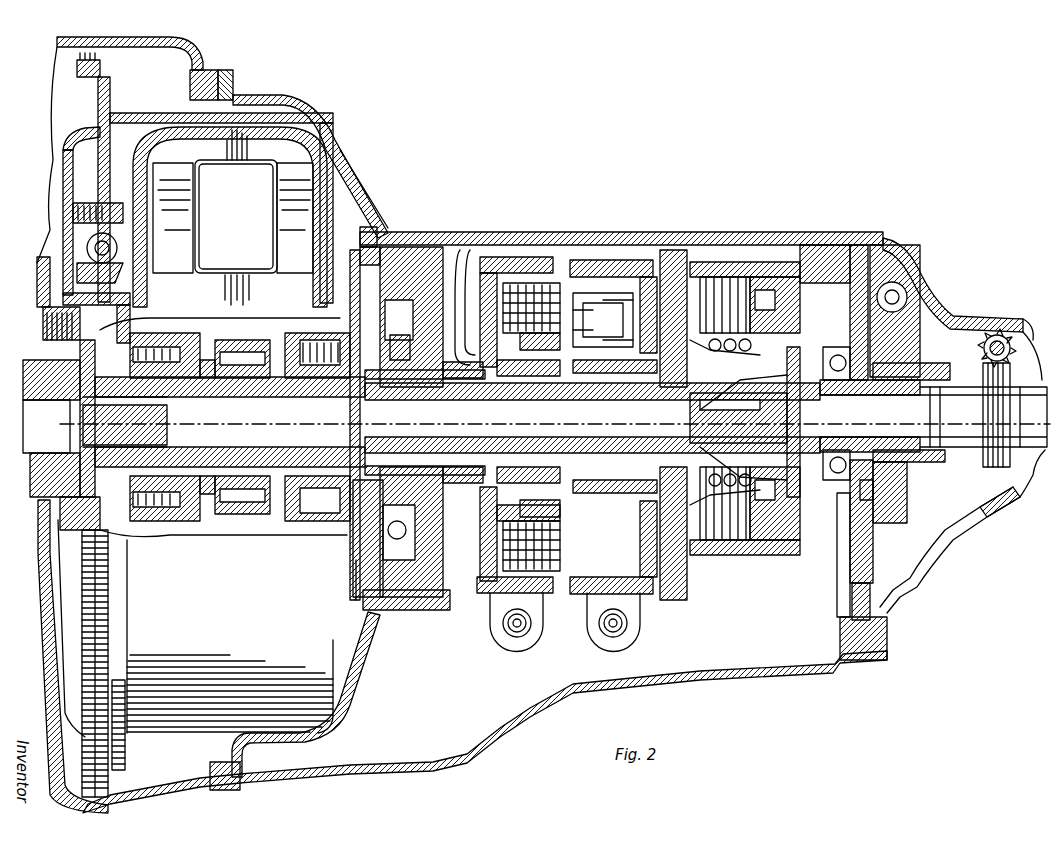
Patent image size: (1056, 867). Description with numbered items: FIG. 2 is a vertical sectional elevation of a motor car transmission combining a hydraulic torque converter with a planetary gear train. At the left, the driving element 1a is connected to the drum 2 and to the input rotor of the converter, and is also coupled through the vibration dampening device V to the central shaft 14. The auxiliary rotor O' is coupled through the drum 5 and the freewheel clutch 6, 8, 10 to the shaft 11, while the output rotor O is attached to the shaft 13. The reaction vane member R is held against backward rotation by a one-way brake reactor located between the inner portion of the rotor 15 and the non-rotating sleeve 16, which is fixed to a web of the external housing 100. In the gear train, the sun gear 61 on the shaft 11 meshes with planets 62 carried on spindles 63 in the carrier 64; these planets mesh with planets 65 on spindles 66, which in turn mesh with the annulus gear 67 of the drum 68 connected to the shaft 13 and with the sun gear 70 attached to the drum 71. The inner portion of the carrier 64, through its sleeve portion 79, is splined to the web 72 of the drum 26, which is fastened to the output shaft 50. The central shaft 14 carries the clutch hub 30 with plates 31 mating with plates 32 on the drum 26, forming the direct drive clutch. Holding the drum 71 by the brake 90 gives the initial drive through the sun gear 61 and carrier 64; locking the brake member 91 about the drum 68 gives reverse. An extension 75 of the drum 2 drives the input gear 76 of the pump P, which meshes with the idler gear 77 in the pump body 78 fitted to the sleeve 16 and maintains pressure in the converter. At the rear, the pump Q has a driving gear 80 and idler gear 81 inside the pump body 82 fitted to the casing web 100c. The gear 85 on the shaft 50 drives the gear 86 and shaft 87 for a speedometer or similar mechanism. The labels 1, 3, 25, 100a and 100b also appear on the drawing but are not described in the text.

The cover plate 1 is at (330, 218).
The driving element 1a is at (66, 150).
The drum 2 is at (340, 150).
The housing joint 3 is at (347, 197).
The drum 5 is at (140, 170).
The freewheel clutch element 6 is at (168, 333).
The freewheel clutch element 8 is at (178, 397).
The freewheel clutch element 10 is at (196, 335).
The shaft 11 is at (257, 396).
The shaft 13 is at (322, 396).
The central shaft 14 is at (82, 432).
The rotor 15 is at (219, 340).
The non-rotating sleeve 16 is at (418, 382).
The bearing ring 25 is at (242, 345).
The drum 26 is at (768, 275).
The clutch hub 30 is at (692, 396).
The clutch plates 31 is at (703, 320).
The clutch plates 32 is at (720, 280).
The output shaft 50 is at (1033, 470).
The sun gear 61 is at (520, 392).
The planets 62 is at (580, 322).
The spindles 63 is at (480, 388).
The carrier 64 is at (600, 305).
The planets 65 is at (553, 495).
The spindles 66 is at (515, 520).
The annulus gear 67 is at (578, 280).
The drum 68 is at (512, 265).
The sun gear 70 is at (608, 360).
The drum 71 is at (660, 272).
The web 72 is at (722, 397).
The extension 75 is at (372, 388).
The input gear 76 is at (388, 332).
The idler gear 77 is at (392, 315).
The pump body 78 is at (410, 567).
The sleeve portion 79 is at (622, 396).
The driving pump gear 80 is at (903, 362).
The idler gear 81 is at (903, 345).
The pump body 82 is at (938, 310).
The gear 85 is at (985, 470).
The gear 86 is at (1025, 335).
The shaft 87 is at (998, 335).
The brake 90 is at (613, 262).
The brake member 91 is at (547, 275).
The external housing 100 is at (450, 250).
The housing section 100a is at (486, 258).
The housing section 100b is at (700, 262).
The casing web 100c is at (870, 240).
The output rotor O is at (236, 201).
The auxiliary rotor O' is at (233, 218).
The pump P is at (414, 236).
The pump Q is at (899, 527).
The reaction vane member R is at (255, 290).
The vibration dampening device V is at (82, 258).